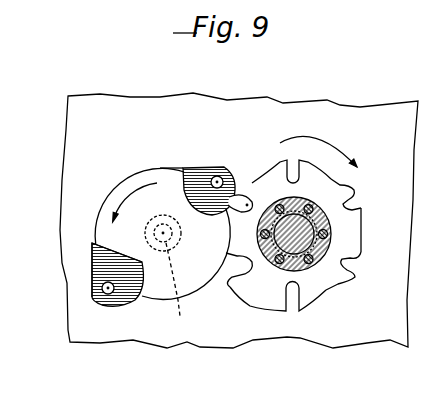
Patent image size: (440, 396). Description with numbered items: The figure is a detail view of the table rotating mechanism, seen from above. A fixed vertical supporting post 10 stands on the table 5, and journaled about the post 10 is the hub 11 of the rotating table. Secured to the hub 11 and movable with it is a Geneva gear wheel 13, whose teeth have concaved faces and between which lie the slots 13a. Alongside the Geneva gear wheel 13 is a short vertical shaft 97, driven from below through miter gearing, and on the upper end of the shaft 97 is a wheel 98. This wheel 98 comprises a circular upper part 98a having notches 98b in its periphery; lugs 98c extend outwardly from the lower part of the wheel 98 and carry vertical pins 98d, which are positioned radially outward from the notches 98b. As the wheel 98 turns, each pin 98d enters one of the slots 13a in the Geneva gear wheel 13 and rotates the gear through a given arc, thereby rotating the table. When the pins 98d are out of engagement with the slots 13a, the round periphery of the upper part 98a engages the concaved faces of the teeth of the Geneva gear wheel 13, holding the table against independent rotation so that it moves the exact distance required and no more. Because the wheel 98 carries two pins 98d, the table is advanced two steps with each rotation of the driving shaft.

The table 5 is at (347, 112).
The fixed vertical supporting post 10 is at (326, 218).
The hub 11 is at (330, 236).
The Geneva gear wheel 13 is at (337, 281).
The slots 13a is at (350, 268).
The short vertical shaft 97 is at (188, 289).
The wheel 98 is at (121, 190).
The circular upper part 98a is at (93, 243).
The notches 98b is at (130, 319).
The lugs 98c is at (82, 354).
The vertical pins 98d is at (229, 169).